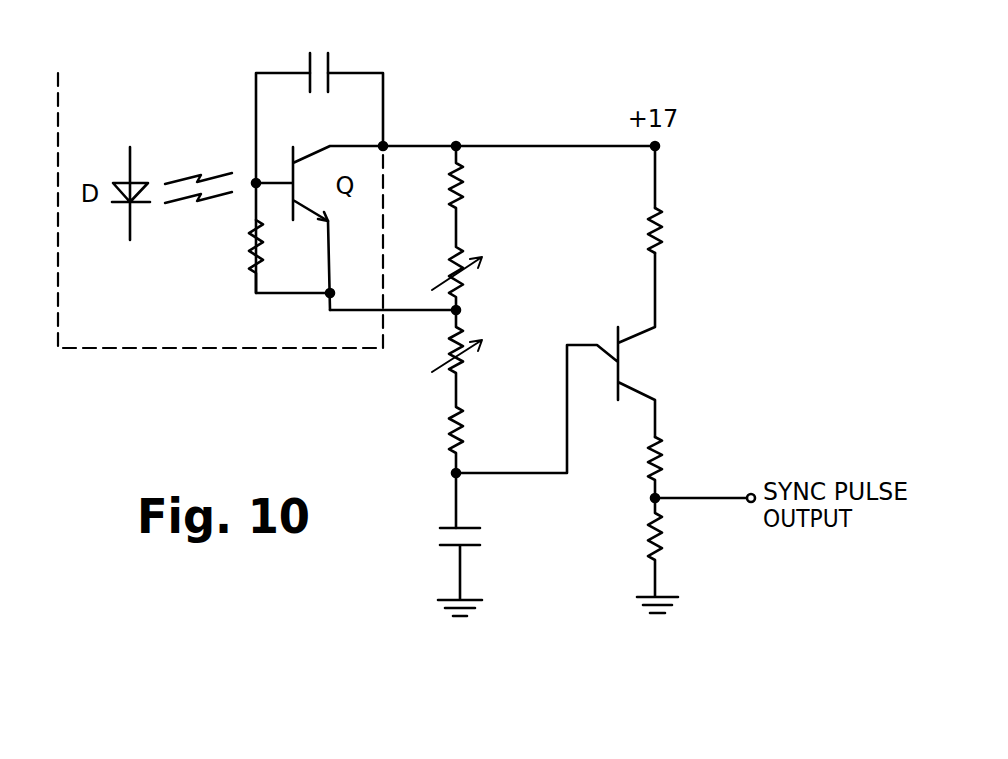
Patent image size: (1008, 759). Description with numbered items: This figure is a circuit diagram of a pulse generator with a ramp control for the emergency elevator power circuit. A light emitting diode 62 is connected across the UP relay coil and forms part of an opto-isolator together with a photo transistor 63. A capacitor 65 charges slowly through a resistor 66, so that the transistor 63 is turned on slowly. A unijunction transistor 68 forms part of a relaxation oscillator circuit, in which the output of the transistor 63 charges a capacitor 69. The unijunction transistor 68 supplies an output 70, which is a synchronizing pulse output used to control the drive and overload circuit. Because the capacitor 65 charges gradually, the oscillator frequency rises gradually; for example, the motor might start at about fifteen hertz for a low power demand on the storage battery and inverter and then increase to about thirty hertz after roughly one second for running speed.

The light emitting diode 62 is at (130, 225).
The photo transistor 63 is at (293, 156).
The capacitor 65 is at (328, 55).
The resistor 66 is at (253, 240).
The unijunction transistor 68 is at (618, 333).
The capacitor 69 is at (467, 527).
The output 70 is at (748, 492).